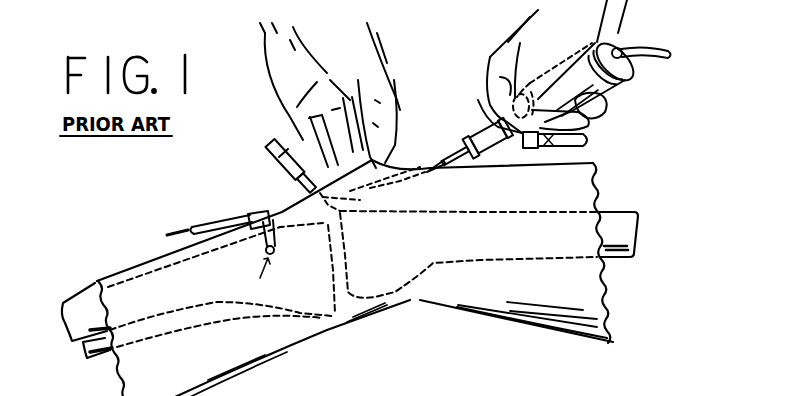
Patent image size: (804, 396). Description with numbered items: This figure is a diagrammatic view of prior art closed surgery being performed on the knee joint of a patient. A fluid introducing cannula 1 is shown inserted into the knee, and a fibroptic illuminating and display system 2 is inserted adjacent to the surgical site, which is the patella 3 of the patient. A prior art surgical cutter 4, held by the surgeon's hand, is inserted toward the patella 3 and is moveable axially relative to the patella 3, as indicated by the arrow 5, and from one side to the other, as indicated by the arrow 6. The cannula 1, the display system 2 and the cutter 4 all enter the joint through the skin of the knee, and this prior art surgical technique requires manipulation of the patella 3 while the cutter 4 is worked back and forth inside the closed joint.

The fluid introducing cannula 1 is at (300, 182).
The fibroptic illuminating and display system 2 is at (245, 214).
The patella 3 is at (385, 160).
The surgical cutter 4 is at (472, 127).
The arrow 5 is at (424, 156).
The arrow 6 is at (433, 185).